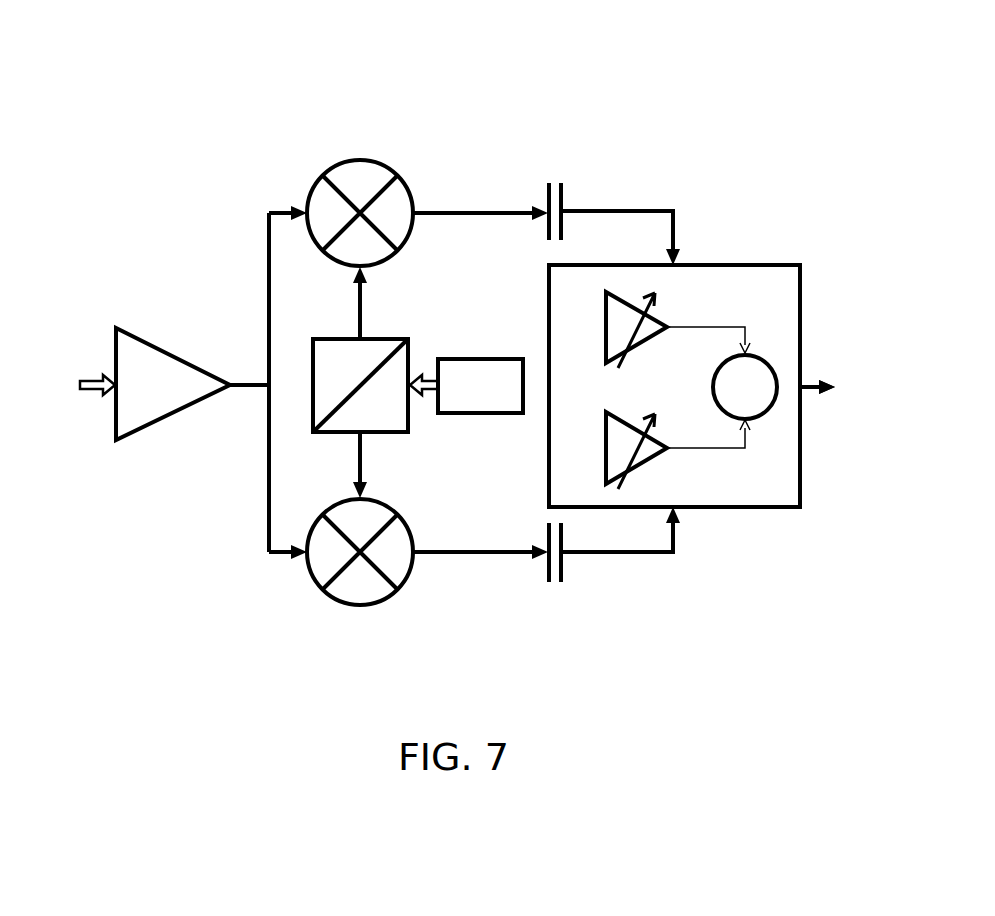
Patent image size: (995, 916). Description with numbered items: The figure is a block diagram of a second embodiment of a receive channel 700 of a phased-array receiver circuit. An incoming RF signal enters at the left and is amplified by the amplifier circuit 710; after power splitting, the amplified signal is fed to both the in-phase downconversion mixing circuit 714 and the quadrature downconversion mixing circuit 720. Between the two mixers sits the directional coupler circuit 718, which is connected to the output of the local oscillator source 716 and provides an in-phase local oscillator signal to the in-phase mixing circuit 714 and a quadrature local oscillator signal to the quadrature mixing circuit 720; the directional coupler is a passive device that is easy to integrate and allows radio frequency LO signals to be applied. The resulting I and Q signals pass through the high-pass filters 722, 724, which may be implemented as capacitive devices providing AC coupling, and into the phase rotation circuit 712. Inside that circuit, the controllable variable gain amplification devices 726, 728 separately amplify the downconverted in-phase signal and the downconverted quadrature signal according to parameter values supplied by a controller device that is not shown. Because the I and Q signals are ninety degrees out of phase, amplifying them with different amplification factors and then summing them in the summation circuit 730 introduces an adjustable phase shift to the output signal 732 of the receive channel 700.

The receive channel 700 is at (491, 52).
The amplifier circuit 710 is at (165, 378).
The phase rotation circuit 712 is at (745, 290).
The in-phase downconversion mixing circuit 714 is at (350, 182).
The local oscillator source 716 is at (475, 378).
The directional coupler circuit 718 is at (385, 355).
The quadrature downconversion mixing circuit 720 is at (368, 520).
The high-pass filter 722 is at (565, 205).
The high-pass filter 724 is at (546, 535).
The controllable variable gain amplification device 726 is at (655, 312).
The controllable variable gain amplification device 728 is at (617, 432).
The summation circuit 730 is at (740, 368).
The output signal 732 is at (808, 385).